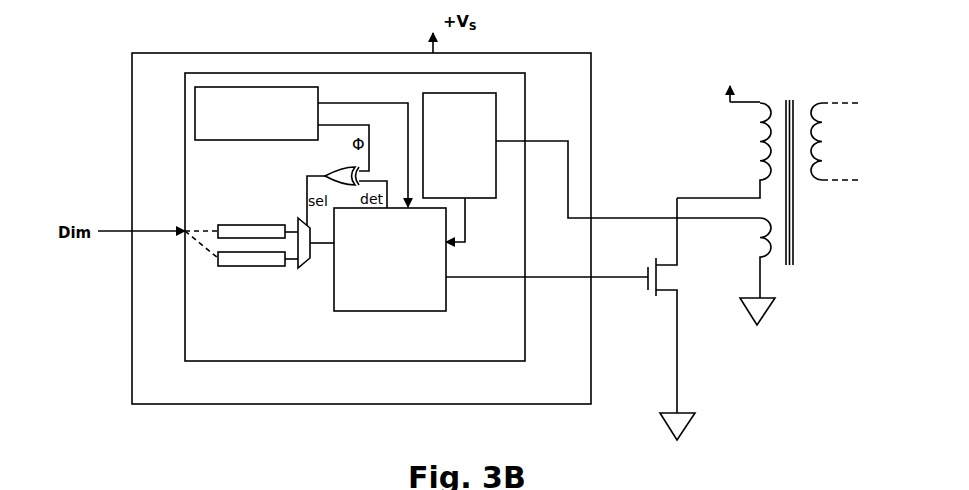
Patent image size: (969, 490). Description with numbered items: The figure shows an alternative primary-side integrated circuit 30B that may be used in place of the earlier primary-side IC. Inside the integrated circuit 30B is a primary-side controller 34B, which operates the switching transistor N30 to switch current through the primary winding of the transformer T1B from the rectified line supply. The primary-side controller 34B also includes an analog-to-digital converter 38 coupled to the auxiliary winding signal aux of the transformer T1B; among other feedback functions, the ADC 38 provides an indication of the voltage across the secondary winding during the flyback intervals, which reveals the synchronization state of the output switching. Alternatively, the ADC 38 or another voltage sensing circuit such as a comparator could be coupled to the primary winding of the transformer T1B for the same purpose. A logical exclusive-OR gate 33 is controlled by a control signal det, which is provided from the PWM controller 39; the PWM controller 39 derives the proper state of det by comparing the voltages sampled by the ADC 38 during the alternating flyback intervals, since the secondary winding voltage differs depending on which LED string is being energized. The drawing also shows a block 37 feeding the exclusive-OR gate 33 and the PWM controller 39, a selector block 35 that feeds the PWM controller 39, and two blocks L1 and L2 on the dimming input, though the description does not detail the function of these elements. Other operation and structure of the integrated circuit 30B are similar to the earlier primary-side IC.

The primary-side integrated circuit 30B is at (176, 384).
The primary-side controller 34B is at (409, 353).
The clock divider 37 is at (298, 133).
The logical exclusive-OR gate 33 is at (345, 167).
The analog-to-digital converter 38 is at (460, 177).
The PWM controller 39 is at (367, 274).
The multiplexer 35 is at (304, 263).
The latch L1 is at (263, 225).
The latch L2 is at (274, 266).
The switching transistor N30 is at (682, 319).
The transformer T1B is at (767, 194).